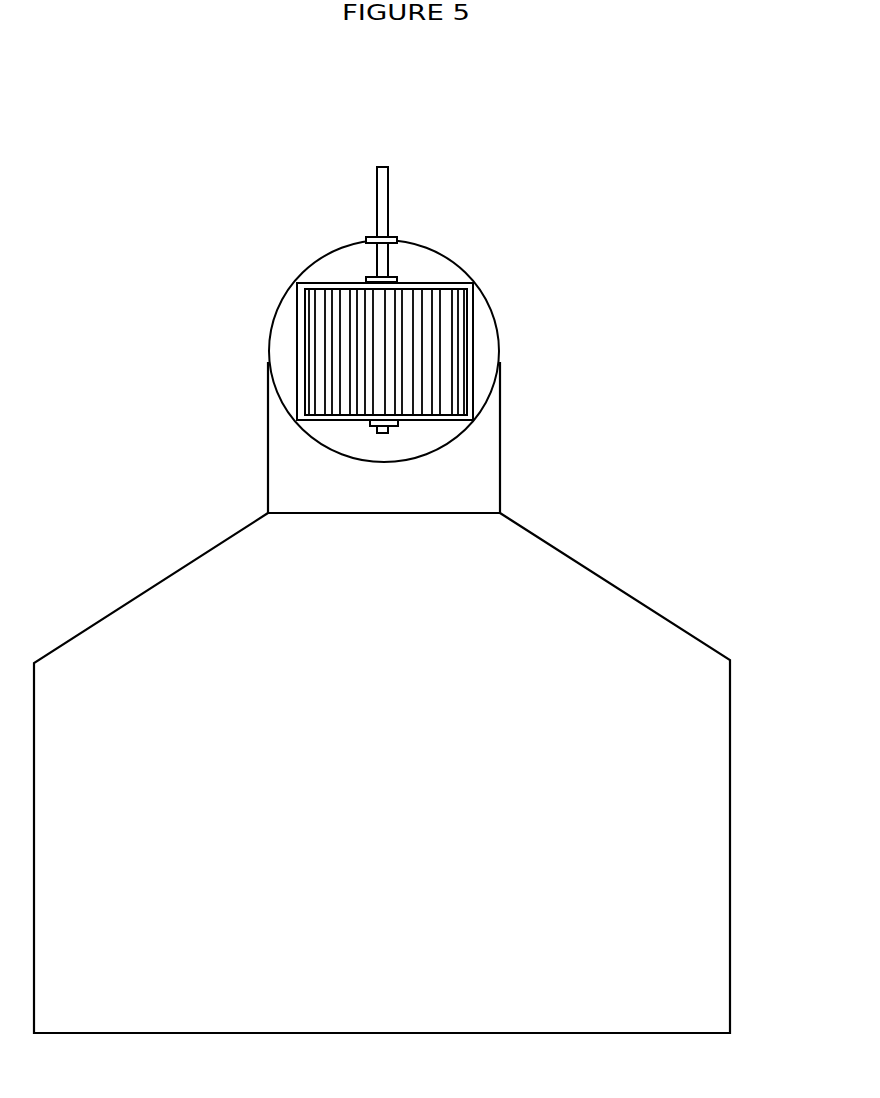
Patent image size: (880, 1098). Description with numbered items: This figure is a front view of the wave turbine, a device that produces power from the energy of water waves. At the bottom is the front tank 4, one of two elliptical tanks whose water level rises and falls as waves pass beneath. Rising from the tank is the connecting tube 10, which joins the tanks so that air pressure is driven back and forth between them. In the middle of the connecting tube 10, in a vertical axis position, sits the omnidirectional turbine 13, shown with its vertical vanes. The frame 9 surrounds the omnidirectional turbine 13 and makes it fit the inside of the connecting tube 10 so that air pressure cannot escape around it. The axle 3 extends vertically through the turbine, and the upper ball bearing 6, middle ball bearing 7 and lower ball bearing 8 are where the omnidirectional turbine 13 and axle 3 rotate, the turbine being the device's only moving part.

The axle 3 is at (404, 182).
The front tank 4 is at (641, 577).
The upper ball bearing 6 is at (412, 232).
The middle ball bearing 7 is at (412, 270).
The lower ball bearing 8 is at (357, 430).
The frame 9 is at (502, 354).
The connecting tube 10 is at (515, 455).
The omnidirectional turbine 13 is at (484, 312).